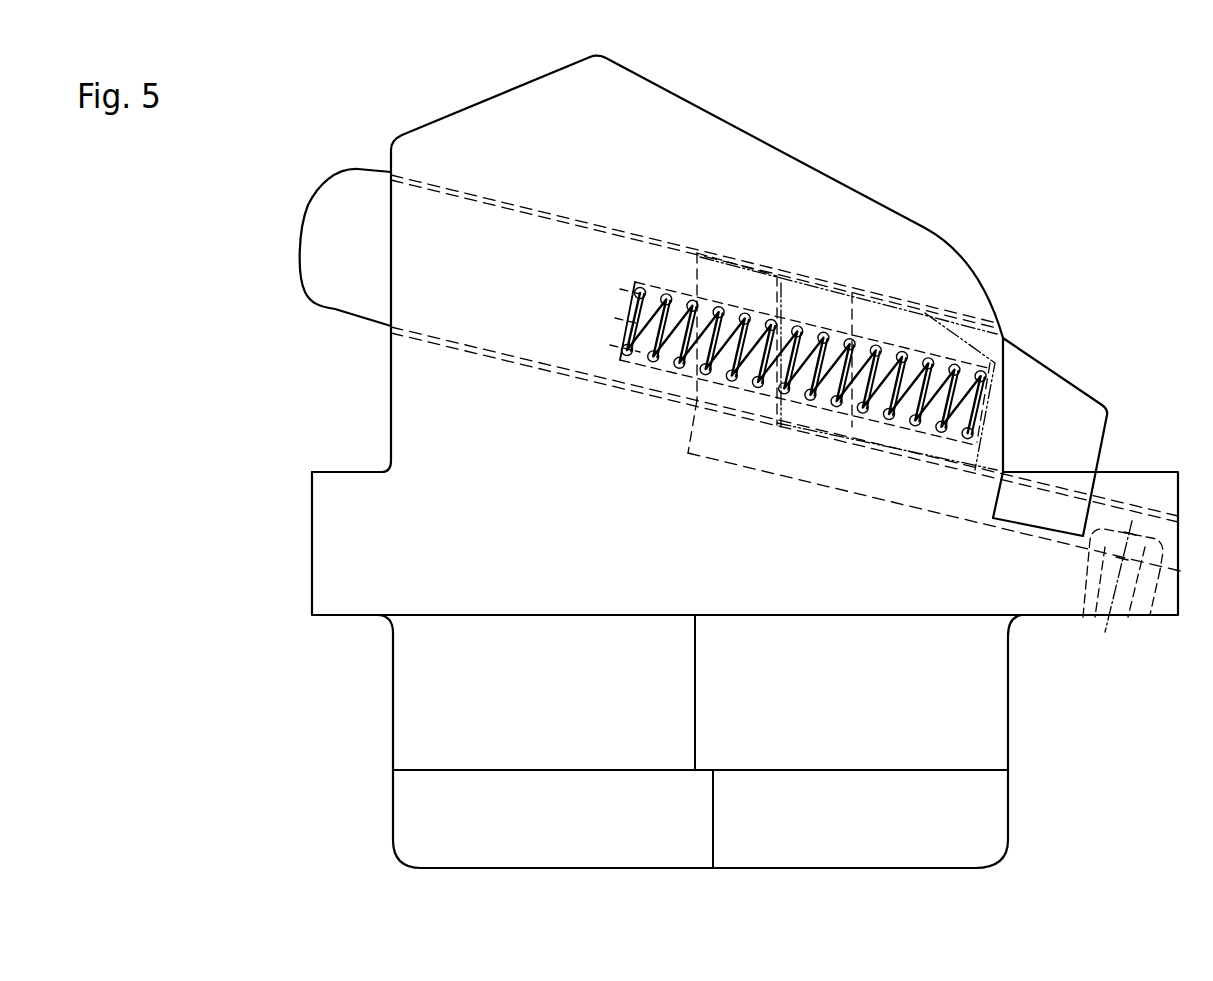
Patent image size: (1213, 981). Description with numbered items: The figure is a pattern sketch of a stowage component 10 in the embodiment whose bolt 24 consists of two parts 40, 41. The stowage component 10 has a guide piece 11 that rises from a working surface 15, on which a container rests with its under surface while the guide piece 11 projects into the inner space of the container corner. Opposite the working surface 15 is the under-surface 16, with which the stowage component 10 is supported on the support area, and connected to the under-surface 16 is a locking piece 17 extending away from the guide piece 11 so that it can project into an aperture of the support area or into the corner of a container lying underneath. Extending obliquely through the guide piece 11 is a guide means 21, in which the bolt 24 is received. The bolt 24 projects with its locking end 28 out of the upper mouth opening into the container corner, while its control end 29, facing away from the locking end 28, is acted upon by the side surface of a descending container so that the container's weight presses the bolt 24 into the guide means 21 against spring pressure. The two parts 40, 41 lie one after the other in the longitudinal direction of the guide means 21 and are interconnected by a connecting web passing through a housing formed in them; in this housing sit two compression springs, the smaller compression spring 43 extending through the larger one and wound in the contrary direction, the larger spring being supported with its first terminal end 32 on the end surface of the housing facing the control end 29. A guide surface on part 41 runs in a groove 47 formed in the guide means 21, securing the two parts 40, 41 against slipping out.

The stowage component 10 is at (716, 92).
The guide piece 11 is at (740, 147).
The working surface 15 is at (1140, 472).
The under-surface 16 is at (1139, 620).
The locking piece 17 is at (988, 730).
The guide means 21 is at (720, 278).
The bolt 24 is at (550, 289).
The locking end 28 is at (314, 233).
The control end 29 is at (1107, 422).
The first terminal end 32 is at (987, 397).
The first part of the bolt 40 is at (510, 225).
The second part of the bolt 41 is at (818, 298).
The smaller compression spring 43 is at (993, 368).
The groove 47 is at (868, 487).